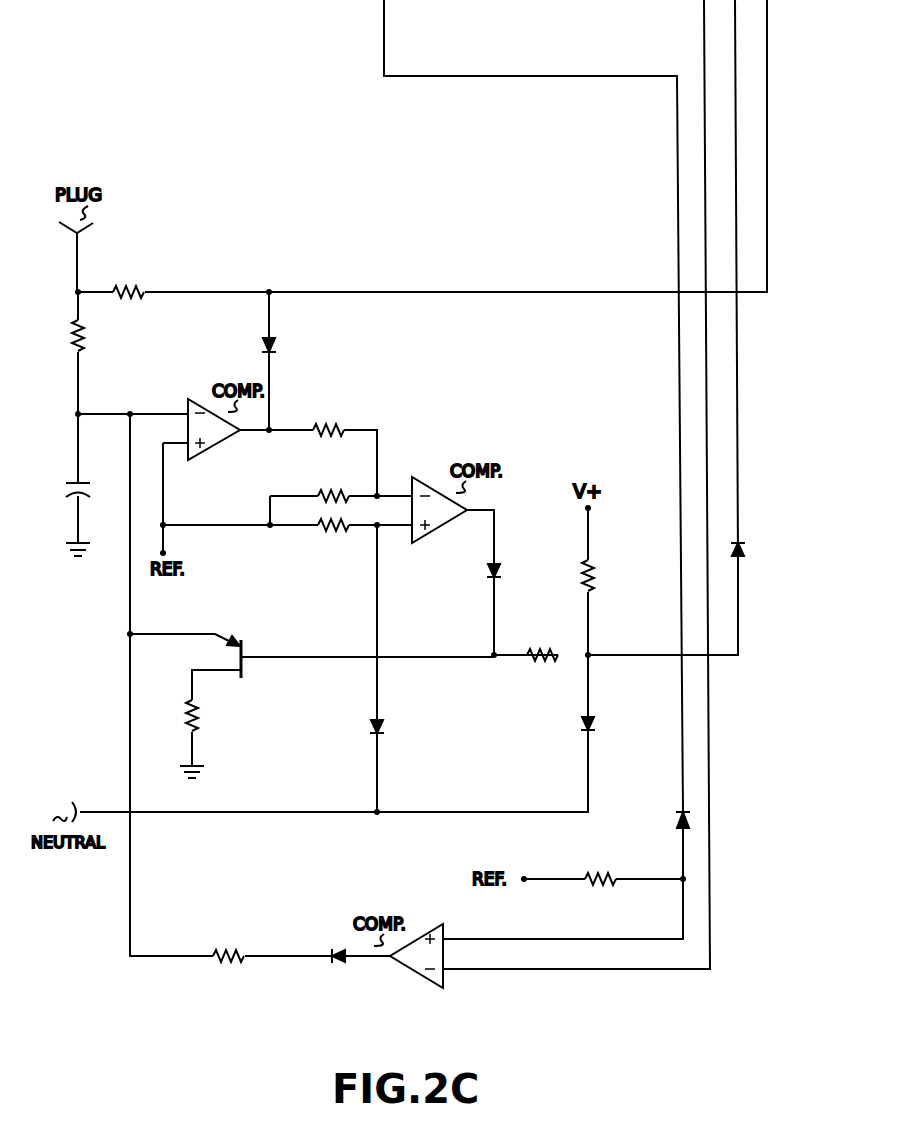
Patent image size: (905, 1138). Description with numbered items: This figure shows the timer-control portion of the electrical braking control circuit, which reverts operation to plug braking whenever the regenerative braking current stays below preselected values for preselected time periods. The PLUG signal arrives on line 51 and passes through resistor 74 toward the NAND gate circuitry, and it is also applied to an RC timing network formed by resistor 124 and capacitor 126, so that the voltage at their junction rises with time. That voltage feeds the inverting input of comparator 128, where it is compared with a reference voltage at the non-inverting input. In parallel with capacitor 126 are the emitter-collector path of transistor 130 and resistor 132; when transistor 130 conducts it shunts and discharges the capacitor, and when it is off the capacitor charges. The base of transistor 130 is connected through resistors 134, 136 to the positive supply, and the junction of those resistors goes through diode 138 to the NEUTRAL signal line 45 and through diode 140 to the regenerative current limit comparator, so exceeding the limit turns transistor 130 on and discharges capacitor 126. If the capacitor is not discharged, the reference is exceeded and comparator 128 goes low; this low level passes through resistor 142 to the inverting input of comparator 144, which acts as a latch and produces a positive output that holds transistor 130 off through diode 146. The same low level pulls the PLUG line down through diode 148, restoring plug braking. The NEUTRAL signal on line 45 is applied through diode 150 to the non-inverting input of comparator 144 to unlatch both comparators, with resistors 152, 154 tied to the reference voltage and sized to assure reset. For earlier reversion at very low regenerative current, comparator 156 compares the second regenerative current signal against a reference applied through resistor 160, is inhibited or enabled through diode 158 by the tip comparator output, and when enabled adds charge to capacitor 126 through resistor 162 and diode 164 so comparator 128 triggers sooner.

The line 51 is at (76, 256).
The resistor 74 is at (128, 286).
The resistor 124 is at (94, 340).
The capacitor 126 is at (70, 472).
The comparator 128 is at (218, 445).
The transistor 130 is at (248, 644).
The resistor 132 is at (208, 710).
The resistor 134 is at (556, 686).
The resistor 136 is at (600, 582).
The diode 138 is at (600, 724).
The diode 140 is at (747, 548).
The resistor 142 is at (327, 416).
The comparator 144 is at (452, 559).
The diode 146 is at (502, 570).
The diode 148 is at (278, 352).
The diode 150 is at (395, 726).
The resistor 152 is at (332, 486).
The resistor 154 is at (330, 536).
The comparator 156 is at (419, 986).
The diode 158 is at (665, 820).
The resistor 160 is at (608, 890).
The resistor 162 is at (228, 938).
The diode 164 is at (330, 970).
The NEUTRAL signal line 45 is at (100, 798).